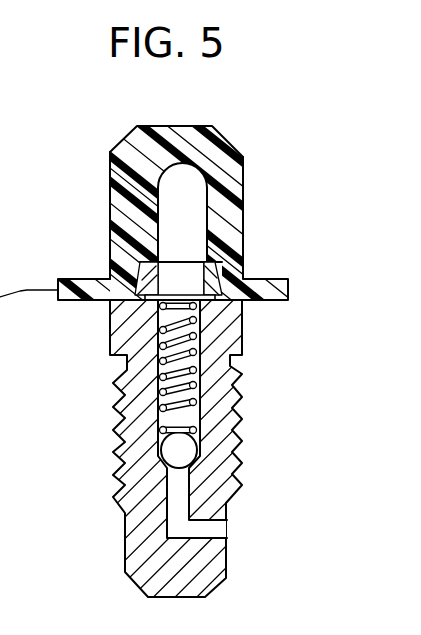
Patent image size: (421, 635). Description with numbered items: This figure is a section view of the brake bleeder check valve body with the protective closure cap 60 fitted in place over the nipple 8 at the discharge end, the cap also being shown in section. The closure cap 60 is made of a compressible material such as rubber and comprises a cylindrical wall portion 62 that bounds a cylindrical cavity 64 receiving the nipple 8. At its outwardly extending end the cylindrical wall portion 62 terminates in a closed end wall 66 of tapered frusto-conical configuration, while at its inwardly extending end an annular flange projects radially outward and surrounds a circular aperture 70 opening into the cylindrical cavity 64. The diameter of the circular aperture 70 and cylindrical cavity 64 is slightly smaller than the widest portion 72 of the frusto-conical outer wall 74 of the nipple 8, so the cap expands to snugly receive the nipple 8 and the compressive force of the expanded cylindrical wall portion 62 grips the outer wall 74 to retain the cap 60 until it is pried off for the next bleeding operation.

The nipple 8 is at (224, 263).
The protective closure cap 60 is at (187, 213).
The cylindrical wall portion 62 is at (77, 215).
The cylindrical cavity 64 is at (237, 195).
The closed end wall 66 is at (155, 125).
The circular aperture 70 is at (210, 445).
The widest portion 72 is at (117, 276).
The frusto-conical outer wall 74 is at (131, 258).